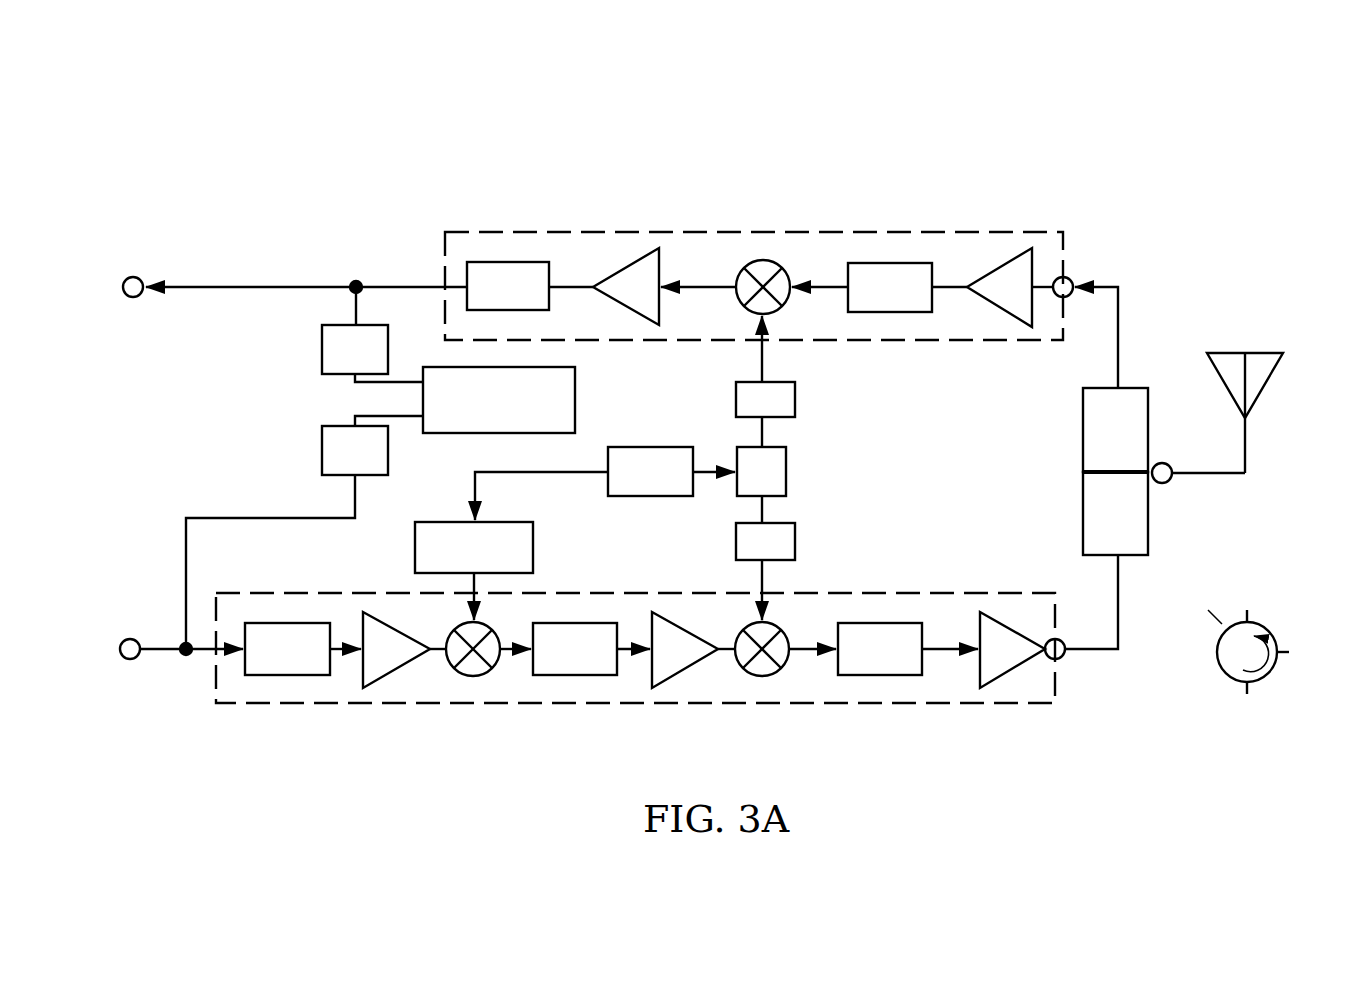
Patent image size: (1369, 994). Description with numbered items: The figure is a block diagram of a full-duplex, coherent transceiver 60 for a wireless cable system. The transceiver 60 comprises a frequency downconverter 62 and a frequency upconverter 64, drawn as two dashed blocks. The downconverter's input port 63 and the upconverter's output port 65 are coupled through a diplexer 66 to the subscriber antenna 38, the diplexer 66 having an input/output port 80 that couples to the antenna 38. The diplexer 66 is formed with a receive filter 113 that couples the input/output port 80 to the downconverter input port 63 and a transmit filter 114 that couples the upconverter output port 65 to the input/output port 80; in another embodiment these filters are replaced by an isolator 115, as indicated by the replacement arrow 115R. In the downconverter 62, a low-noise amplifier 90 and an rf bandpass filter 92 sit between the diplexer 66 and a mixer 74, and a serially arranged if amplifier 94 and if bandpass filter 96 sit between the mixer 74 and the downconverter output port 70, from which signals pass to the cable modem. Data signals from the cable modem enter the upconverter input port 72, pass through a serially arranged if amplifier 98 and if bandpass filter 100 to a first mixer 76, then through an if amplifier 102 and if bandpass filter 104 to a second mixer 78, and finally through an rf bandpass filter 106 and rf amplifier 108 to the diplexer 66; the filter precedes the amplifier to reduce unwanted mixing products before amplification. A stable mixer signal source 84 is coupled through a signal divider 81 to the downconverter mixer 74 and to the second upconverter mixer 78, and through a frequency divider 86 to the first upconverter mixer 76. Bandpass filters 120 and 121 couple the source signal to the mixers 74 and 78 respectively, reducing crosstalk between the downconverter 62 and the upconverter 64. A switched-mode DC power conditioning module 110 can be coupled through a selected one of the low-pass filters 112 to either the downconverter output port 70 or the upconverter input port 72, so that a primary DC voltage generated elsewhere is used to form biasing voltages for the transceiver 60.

The transceiver 60 is at (398, 203).
The frequency downconverter 62 is at (888, 230).
The frequency upconverter 64 is at (423, 708).
The downconverter output port 70 is at (141, 266).
The upconverter input port 72 is at (124, 634).
The downconverter input port 63 is at (1073, 280).
The upconverter output port 65 is at (1062, 658).
The diplexer 66 is at (1087, 419).
The receive filter 113 is at (1083, 418).
The transmit filter 114 is at (1083, 505).
The input/output port 80 is at (1165, 485).
The subscriber antenna 38 is at (1262, 398).
The isolator 115 is at (1272, 668).
The replacement arrow 115R is at (1161, 551).
The if amplifier 94 is at (626, 250).
The if bandpass filter 96 is at (550, 304).
The downconverter mixer 74 is at (742, 268).
The rf bandpass filter 92 is at (870, 312).
The low-noise amplifier 90 is at (1005, 262).
The low-pass filters 112 is at (322, 352).
The switched-mode DC power conditioning module 110 is at (577, 385).
The stable mixer signal source 84 is at (655, 496).
The signal divider 81 is at (786, 462).
The bandpass filter 120 is at (795, 398).
The bandpass filter 121 is at (795, 540).
The frequency divider 86 is at (415, 545).
The if bandpass filter 100 is at (290, 675).
The if amplifier 98 is at (378, 688).
The first upconverter mixer 76 is at (492, 670).
The if bandpass filter 104 is at (580, 675).
The if amplifier 102 is at (668, 688).
The second upconverter mixer 78 is at (780, 670).
The rf bandpass filter 106 is at (880, 675).
The rf amplifier 108 is at (1000, 688).